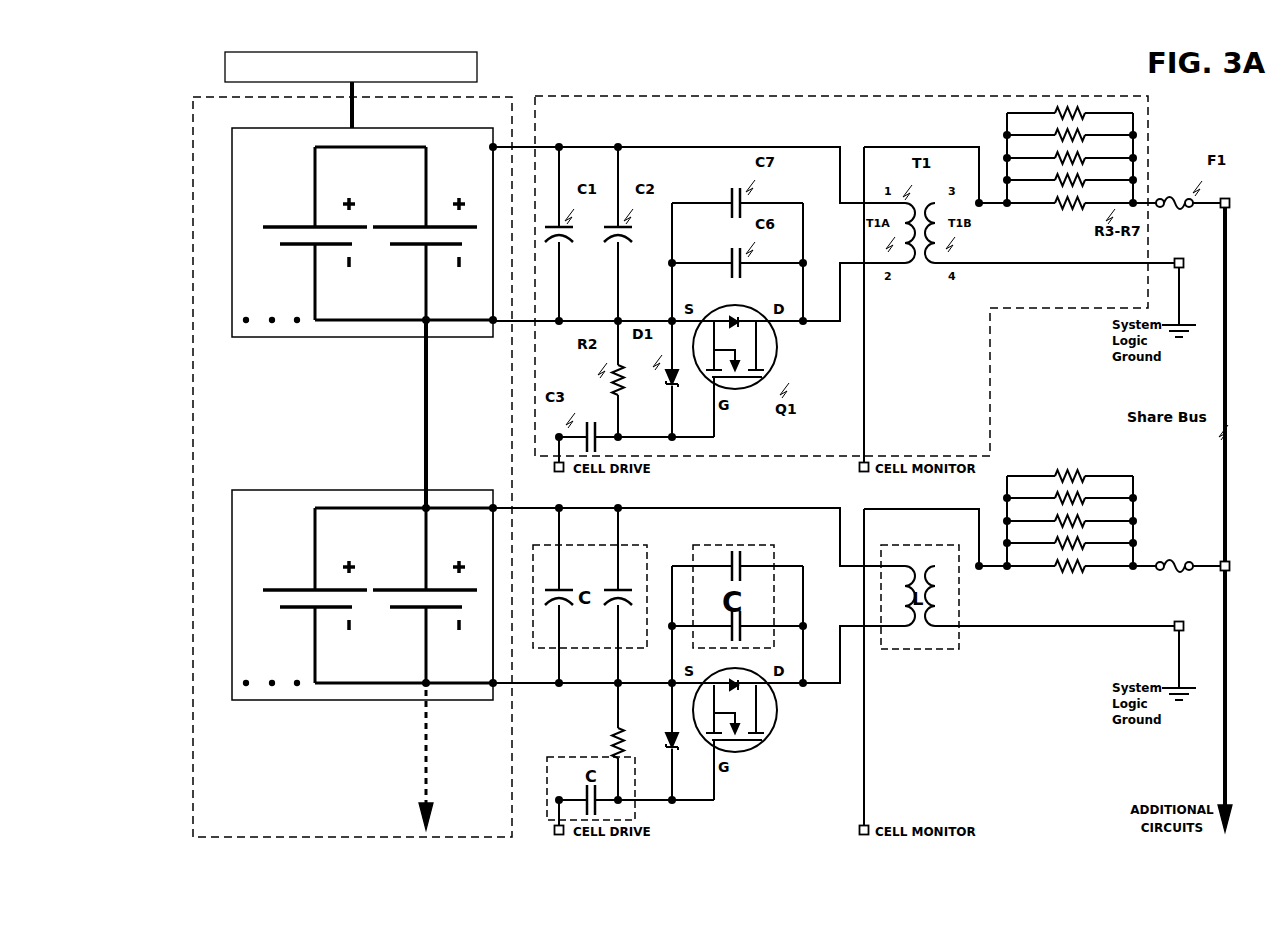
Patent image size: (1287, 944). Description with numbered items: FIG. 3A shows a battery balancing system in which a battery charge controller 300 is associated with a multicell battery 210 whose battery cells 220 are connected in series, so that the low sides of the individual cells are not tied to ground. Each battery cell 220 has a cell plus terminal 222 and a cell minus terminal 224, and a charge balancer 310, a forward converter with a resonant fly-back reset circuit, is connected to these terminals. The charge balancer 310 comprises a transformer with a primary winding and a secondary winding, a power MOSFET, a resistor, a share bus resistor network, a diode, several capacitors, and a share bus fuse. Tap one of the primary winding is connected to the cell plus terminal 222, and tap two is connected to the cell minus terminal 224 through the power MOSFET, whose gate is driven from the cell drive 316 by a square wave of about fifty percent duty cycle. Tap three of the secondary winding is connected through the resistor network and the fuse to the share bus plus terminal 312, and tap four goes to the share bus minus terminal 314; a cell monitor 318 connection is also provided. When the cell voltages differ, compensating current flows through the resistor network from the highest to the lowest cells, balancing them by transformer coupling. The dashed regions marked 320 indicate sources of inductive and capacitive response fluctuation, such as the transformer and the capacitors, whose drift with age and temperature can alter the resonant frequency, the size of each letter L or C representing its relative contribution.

The battery charge controller 300 is at (351, 90).
The multicell battery 210 is at (368, 445).
The battery cell 220 is at (346, 478).
The cell plus terminal 222 is at (479, 162).
The cell minus terminal 224 is at (479, 304).
The charge balancer 310 is at (841, 276).
The share bus plus terminal 312 is at (1243, 190).
The share bus minus terminal 314 is at (1195, 246).
The cell drive 316 is at (542, 482).
The cell monitor 318 is at (847, 482).
The sources of inductive and capacitive response fluctuation 320 is at (751, 668).